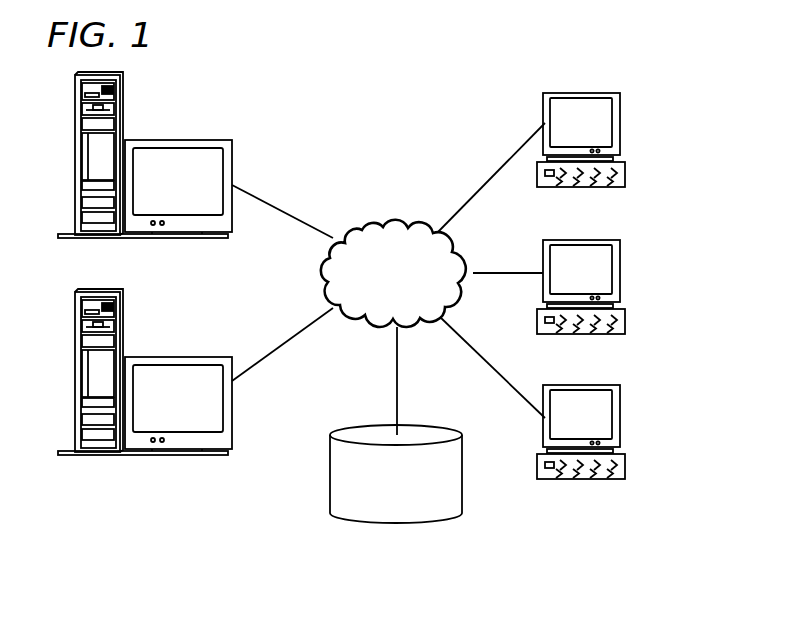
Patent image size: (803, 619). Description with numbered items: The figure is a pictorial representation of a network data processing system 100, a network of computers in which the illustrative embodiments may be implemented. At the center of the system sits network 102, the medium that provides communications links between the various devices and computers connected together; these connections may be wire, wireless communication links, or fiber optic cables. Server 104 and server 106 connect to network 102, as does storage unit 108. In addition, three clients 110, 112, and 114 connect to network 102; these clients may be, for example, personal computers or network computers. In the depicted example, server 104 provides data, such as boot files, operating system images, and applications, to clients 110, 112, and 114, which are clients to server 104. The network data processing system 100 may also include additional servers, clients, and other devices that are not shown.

The network data processing system 100 is at (447, 107).
The network 102 is at (367, 222).
The server 104 is at (77, 157).
The server 106 is at (75, 377).
The storage unit 108 is at (377, 525).
The client 110 is at (620, 123).
The client 112 is at (620, 273).
The client 114 is at (620, 418).